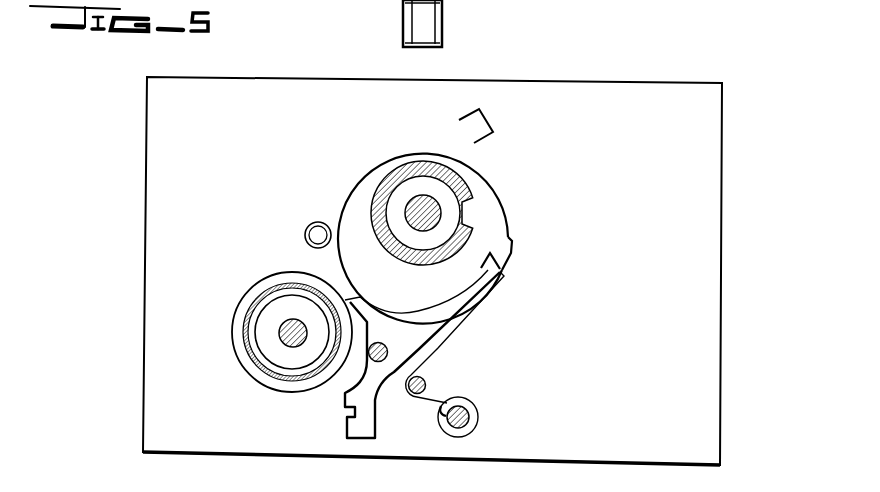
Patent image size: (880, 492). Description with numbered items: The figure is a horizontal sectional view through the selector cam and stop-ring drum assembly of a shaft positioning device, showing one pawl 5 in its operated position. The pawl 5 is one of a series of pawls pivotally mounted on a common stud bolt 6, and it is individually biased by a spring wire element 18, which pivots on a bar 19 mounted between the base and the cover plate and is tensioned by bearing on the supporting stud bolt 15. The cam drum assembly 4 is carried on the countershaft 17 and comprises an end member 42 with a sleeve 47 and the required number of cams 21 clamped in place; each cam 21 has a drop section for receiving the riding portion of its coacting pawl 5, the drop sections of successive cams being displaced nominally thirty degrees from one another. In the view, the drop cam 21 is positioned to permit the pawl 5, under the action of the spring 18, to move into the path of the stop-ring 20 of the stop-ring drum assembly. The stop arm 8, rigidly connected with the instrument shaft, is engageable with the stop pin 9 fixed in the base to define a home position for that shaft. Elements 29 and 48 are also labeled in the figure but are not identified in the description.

The cam drum assembly 4 is at (273, 336).
The pawl 5 is at (497, 275).
The stud bolt 6 is at (385, 345).
The stop arm 8 is at (473, 128).
The stop pin 9 is at (317, 223).
The stud bolt 15 is at (470, 414).
The countershaft 17 is at (283, 320).
The spring wire element 18 is at (461, 322).
The bar 19 is at (428, 379).
The stop-ring 20 is at (500, 233).
The cam 21 is at (294, 271).
The block 29 is at (355, 0).
The end member 42 is at (300, 364).
The sleeve 47 is at (260, 372).
The guide 48 is at (525, 0).